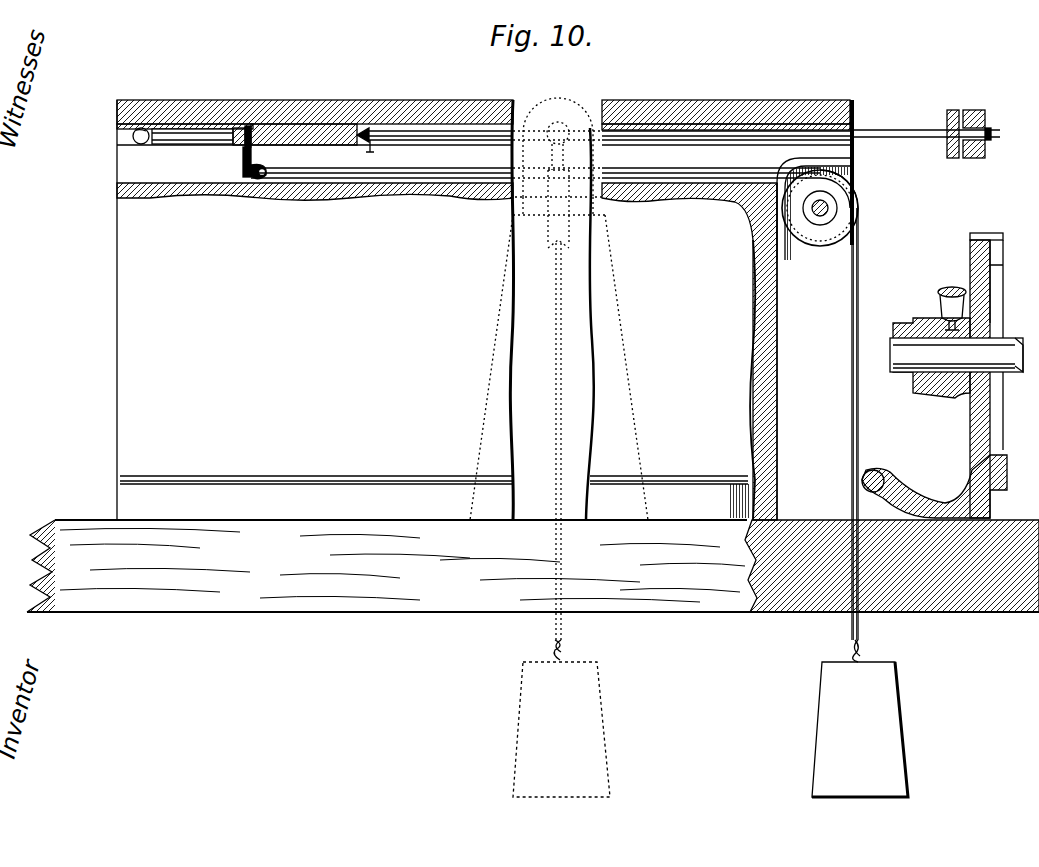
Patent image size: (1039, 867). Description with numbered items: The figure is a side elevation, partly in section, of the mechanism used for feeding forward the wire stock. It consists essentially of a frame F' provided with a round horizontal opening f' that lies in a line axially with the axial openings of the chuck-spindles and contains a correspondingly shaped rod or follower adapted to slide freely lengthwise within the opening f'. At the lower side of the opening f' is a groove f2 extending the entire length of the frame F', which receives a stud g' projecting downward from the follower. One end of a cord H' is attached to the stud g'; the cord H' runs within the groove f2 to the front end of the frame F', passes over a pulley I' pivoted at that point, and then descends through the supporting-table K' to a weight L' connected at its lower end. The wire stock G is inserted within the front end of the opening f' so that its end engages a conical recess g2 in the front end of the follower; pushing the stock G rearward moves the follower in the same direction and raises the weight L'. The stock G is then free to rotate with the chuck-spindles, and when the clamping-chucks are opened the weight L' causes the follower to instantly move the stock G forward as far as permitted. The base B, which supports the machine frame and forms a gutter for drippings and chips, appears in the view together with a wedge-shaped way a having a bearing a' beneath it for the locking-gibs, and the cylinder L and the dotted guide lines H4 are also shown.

The frame F' is at (434, 310).
The wire stock G is at (448, 124).
The bearing a' is at (304, 110).
The way a is at (939, 135).
The round horizontal opening f' is at (678, 109).
The groove f2 is at (119, 170).
The stud g' is at (236, 163).
The conical recess g2 is at (373, 155).
The cord H' is at (568, 395).
The pulley I' is at (695, 379).
The guide lines H4 is at (466, 408).
The supporting-table K' is at (533, 566).
The cylinder L is at (956, 375).
The base B is at (880, 476).
The weight L' is at (710, 718).